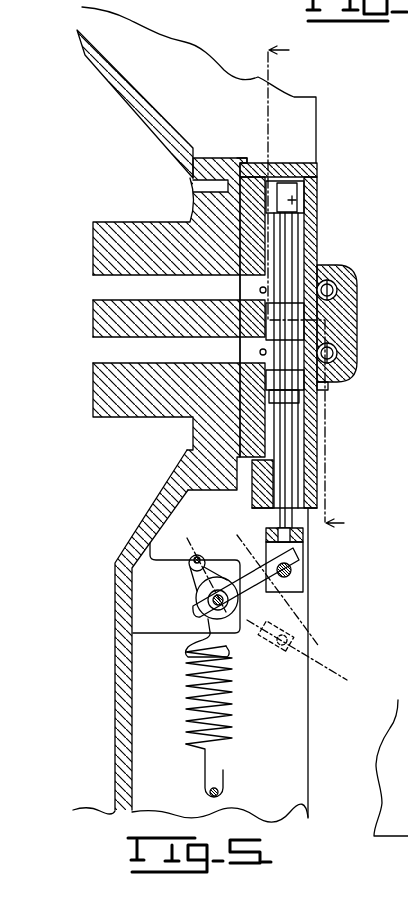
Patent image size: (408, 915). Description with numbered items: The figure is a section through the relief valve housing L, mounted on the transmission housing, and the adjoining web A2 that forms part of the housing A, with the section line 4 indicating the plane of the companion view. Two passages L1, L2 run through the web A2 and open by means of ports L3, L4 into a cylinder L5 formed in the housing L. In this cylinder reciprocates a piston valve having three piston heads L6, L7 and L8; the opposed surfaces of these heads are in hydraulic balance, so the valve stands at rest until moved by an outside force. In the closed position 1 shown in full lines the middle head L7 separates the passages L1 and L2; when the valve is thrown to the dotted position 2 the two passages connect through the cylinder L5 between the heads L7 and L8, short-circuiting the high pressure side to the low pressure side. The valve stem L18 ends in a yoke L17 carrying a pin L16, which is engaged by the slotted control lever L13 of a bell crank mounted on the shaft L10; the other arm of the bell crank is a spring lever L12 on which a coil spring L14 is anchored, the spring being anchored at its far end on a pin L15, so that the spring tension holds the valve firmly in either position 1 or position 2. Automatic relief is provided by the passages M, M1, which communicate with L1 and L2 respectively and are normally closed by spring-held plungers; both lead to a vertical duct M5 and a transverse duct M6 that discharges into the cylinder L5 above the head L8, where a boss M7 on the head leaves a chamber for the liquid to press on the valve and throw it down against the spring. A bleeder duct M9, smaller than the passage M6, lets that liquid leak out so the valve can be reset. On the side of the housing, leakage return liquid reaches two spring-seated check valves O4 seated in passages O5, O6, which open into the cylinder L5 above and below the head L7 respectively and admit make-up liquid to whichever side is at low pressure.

The arm A is at (143, 97).
The web A2 is at (108, 230).
The passage M is at (150, 211).
The passage M1 is at (198, 418).
The vertical duct M5 is at (306, 243).
The transverse duct M6 is at (318, 182).
The boss M7 is at (292, 181).
The bleeder duct M9 is at (248, 160).
The relief valve housing L is at (314, 253).
The passage L1 is at (166, 287).
The passage L2 is at (166, 350).
The port L3 is at (240, 292).
The port L4 is at (240, 353).
The cylinder L5 is at (297, 219).
The piston head L6 is at (300, 390).
The piston head L7 is at (296, 318).
The piston head L8 is at (290, 198).
The shaft L10 is at (262, 623).
The spring lever L12 is at (190, 581).
The slotted control lever L13 is at (240, 604).
The coil spring L14 is at (233, 698).
The pin L15 is at (226, 794).
The pin L16 is at (292, 573).
The yoke L17 is at (266, 545).
The valve stem L18 is at (283, 455).
The spring-seated check valve O4 is at (352, 293).
The passage O5 is at (343, 282).
The passage O6 is at (353, 361).
The position 1 is at (304, 599).
The position 2 is at (291, 642).
The section line 4- 4 is at (301, 290).